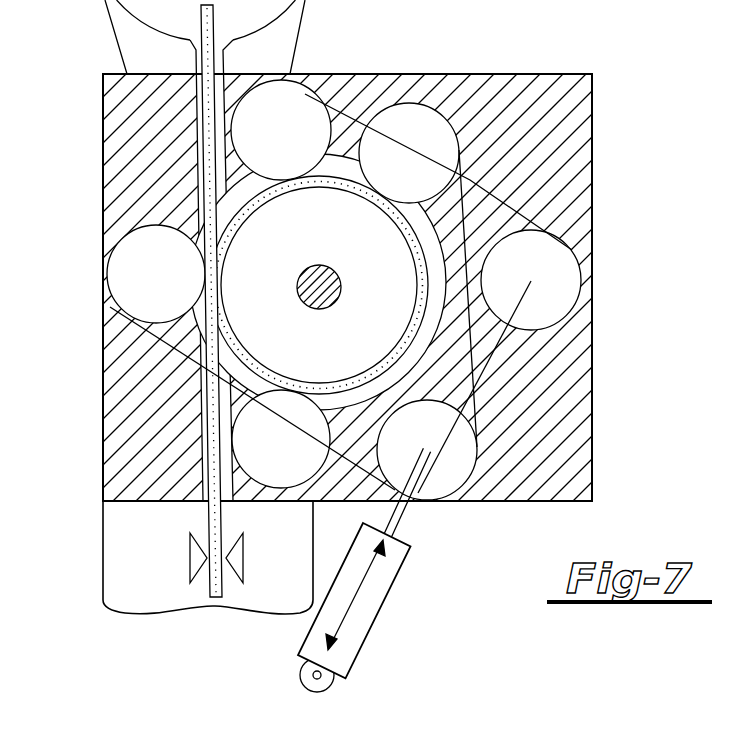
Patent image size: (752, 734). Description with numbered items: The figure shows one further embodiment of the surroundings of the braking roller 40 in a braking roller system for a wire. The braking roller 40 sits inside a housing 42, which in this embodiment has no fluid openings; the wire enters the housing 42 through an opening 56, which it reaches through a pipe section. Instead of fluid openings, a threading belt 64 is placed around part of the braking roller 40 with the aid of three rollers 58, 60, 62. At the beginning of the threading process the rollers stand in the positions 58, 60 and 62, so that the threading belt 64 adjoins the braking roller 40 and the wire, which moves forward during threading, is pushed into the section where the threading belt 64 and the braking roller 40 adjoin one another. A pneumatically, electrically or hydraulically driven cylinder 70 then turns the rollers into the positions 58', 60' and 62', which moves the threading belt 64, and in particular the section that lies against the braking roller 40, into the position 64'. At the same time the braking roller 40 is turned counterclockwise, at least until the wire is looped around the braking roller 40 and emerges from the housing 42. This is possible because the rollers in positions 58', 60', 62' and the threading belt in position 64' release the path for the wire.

The braking roller 40 is at (347, 236).
The housing 42 is at (572, 140).
The opening 56 is at (197, 163).
The roller 58 is at (427, 115).
The roller position 58' is at (305, 100).
The roller 60 is at (439, 479).
The roller position 60' is at (587, 280).
The roller 62 is at (113, 282).
The roller position 62' is at (281, 482).
The threading belt 64 is at (279, 321).
The threading belt position 64' is at (501, 172).
The cylinder 70 is at (378, 583).